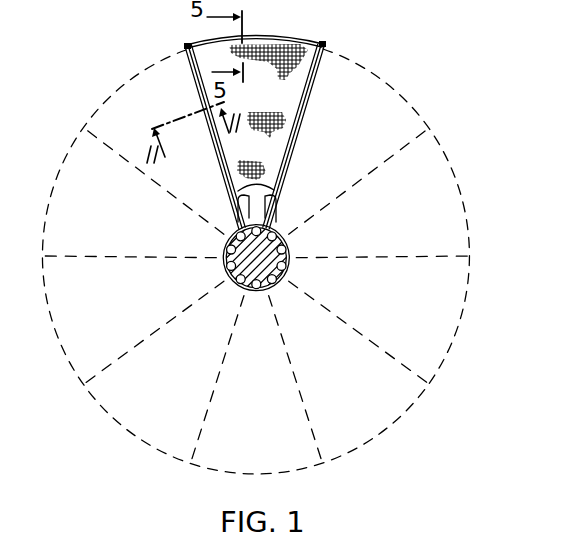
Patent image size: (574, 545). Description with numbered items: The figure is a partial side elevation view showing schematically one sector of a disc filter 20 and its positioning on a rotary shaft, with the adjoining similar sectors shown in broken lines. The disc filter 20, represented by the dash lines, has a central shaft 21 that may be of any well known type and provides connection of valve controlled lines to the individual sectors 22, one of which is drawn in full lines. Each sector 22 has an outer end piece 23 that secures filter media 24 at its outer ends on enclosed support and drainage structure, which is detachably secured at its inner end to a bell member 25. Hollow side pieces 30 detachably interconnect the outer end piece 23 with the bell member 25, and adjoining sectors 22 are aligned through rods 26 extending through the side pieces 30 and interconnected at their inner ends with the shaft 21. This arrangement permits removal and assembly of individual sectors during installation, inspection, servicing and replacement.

The disc filter 20 is at (472, 251).
The central shaft 21 is at (288, 249).
The sector 22 is at (267, 38).
The outer end piece 23 is at (198, 44).
The filter media 24 is at (272, 108).
The bell member 25 is at (276, 192).
The rods 26 is at (256, 210).
The hollow side pieces 30 is at (212, 138).